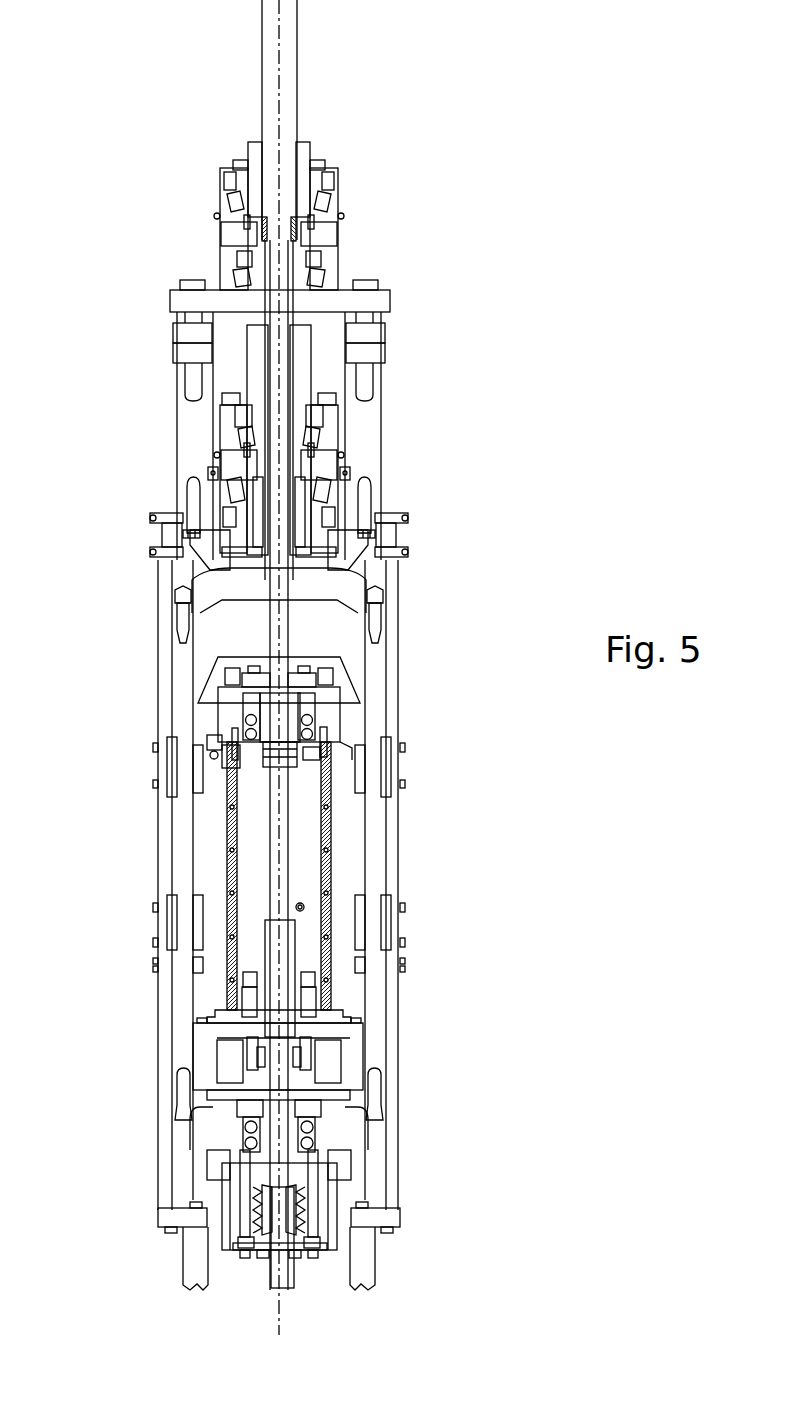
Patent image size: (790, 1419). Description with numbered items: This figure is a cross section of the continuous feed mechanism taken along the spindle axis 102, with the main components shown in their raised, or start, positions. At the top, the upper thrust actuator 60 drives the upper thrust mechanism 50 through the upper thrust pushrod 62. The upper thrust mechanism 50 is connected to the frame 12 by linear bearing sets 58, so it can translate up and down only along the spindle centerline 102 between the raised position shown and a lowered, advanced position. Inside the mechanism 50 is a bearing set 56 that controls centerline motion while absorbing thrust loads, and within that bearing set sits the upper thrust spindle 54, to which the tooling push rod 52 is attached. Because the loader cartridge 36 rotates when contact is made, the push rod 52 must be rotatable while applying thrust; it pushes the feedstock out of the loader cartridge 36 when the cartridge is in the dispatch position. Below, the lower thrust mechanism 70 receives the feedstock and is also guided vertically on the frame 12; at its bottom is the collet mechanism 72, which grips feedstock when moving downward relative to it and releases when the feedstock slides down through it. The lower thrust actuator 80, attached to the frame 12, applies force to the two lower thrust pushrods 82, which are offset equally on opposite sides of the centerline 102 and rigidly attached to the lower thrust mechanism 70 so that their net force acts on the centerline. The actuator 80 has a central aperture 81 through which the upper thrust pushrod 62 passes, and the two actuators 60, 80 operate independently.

The frame 12 is at (158, 623).
The loader cartridge 36 is at (268, 967).
The upper thrust mechanism 50 is at (338, 718).
The tooling push rod 52 is at (270, 862).
The upper thrust spindle 54 is at (294, 712).
The bearing set 56 is at (245, 722).
The linear bearing sets 58 is at (232, 822).
The upper thrust actuator 60 is at (369, 198).
The upper thrust pushrod 62 is at (290, 365).
The lower thrust mechanism 70 is at (210, 1110).
The collet mechanism 72 is at (250, 1215).
The lower thrust actuator 80 is at (215, 438).
The central aperture 81 is at (294, 604).
The lower thrust pushrods 82 is at (183, 770).
The spindle axis 102 is at (280, 1316).